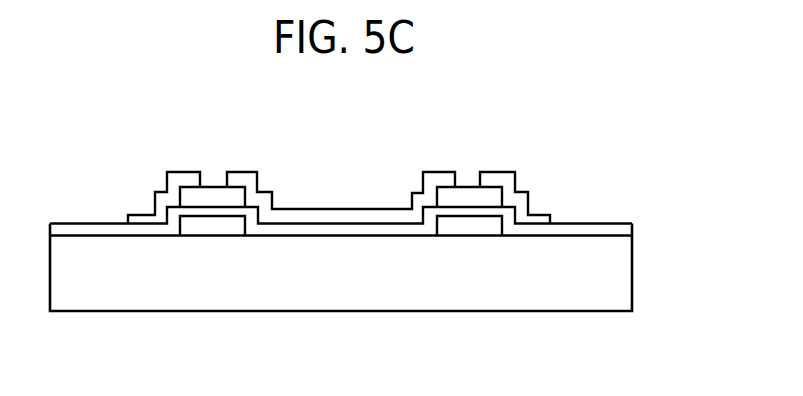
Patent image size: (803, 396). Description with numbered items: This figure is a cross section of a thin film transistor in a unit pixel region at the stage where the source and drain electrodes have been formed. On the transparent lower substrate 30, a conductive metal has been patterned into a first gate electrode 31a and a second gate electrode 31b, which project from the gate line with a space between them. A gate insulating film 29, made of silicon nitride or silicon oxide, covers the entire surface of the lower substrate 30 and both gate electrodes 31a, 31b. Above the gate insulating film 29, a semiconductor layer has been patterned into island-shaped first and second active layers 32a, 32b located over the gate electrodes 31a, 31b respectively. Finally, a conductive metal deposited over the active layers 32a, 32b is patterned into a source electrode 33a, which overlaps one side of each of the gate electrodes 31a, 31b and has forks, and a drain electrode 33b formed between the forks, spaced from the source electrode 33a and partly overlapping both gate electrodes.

The gate insulating film 29 is at (623, 232).
The lower substrate 30 is at (623, 277).
The first gate electrode 31a is at (198, 228).
The second gate electrode 31b is at (463, 228).
The first active layer 32a is at (208, 188).
The second active layer 32b is at (467, 188).
The source electrode 33a is at (142, 214).
The drain electrode 33b is at (343, 217).